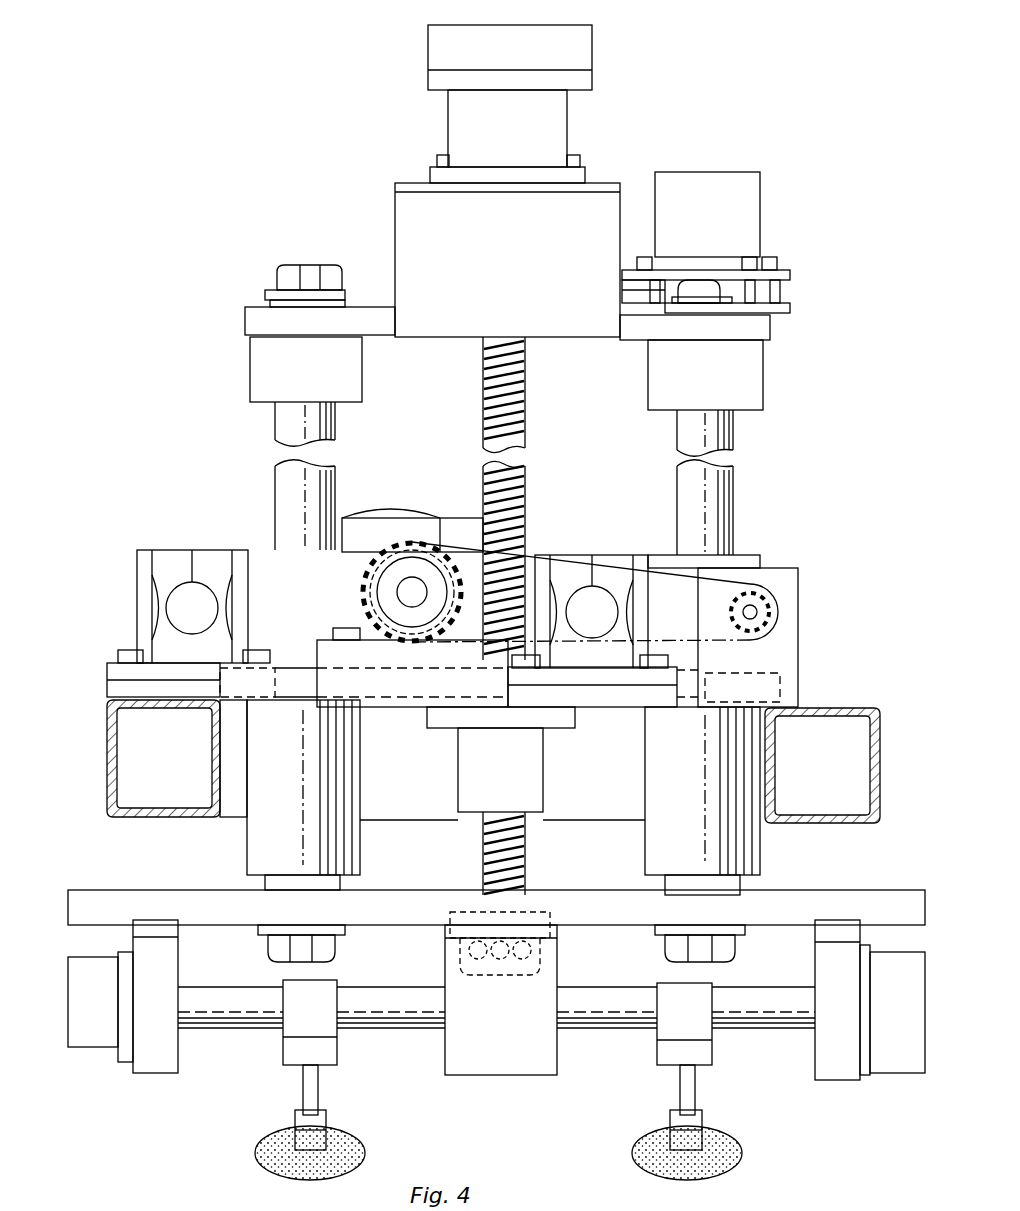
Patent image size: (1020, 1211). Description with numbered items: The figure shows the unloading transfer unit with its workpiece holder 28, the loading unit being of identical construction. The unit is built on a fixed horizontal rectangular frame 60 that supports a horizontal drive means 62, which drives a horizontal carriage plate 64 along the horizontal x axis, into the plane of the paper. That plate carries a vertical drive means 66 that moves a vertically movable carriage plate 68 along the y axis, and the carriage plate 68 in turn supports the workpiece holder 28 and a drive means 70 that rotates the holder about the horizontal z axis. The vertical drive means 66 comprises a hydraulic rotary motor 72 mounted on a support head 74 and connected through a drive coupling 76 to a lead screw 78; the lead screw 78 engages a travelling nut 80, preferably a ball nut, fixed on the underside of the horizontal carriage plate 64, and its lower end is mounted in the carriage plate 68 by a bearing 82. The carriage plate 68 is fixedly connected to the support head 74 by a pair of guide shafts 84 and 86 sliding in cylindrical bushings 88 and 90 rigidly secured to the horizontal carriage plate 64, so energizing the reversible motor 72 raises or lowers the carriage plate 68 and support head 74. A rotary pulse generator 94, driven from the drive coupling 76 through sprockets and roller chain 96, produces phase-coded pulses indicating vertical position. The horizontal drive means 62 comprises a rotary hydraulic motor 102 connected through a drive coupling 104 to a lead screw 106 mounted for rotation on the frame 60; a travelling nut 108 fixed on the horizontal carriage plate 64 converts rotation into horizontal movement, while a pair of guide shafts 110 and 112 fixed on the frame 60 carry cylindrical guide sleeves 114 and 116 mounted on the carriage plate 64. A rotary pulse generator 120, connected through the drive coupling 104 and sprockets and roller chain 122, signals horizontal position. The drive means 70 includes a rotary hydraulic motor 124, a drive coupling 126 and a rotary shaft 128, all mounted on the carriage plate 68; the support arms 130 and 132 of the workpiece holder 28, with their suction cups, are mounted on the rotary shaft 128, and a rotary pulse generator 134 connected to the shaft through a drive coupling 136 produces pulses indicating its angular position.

The workpiece holder 28 is at (428, 1047).
The fixed horizontal rectangular frame 60 is at (107, 735).
The horizontal drive means 62 is at (420, 500).
The horizontal carriage plate 64 is at (292, 665).
The vertical drive means 66 is at (593, 118).
The vertically movable carriage plate 68 is at (440, 890).
The drive means 70 is at (795, 1050).
The hydraulic rotary motor 72 is at (578, 58).
The support head 74 is at (352, 307).
The drive coupling 76 is at (395, 205).
The lead screw 78 is at (526, 376).
The travelling nut 80 is at (525, 768).
The bearing 82 is at (540, 940).
The guide shaft 84 is at (290, 500).
The guide shaft 86 is at (735, 443).
The cylindrical bushing 88 is at (247, 858).
The cylindrical bushing 90 is at (740, 855).
The rotary pulse generator 94 is at (742, 218).
The sprockets and roller chain 96 is at (622, 276).
The rotary hydraulic motor 102 is at (392, 518).
The drive coupling 104 is at (465, 530).
The lead screw 106 is at (402, 588).
The travelling nut 108 is at (415, 628).
The guide shaft 110 is at (185, 627).
The guide shaft 112 is at (582, 600).
The cylindrical guide sleeve 114 is at (148, 592).
The cylindrical guide sleeve 116 is at (632, 600).
The rotary pulse generator 120 is at (770, 566).
The sprockets and roller chain 122 is at (757, 622).
The rotary hydraulic motor 124 is at (895, 1075).
The drive coupling 126 is at (836, 1082).
The rotary shaft 128 is at (775, 998).
The support arm 130 is at (285, 1050).
The support arm 132 is at (660, 1050).
The rotary pulse generator 134 is at (90, 1032).
The drive coupling 136 is at (152, 1075).